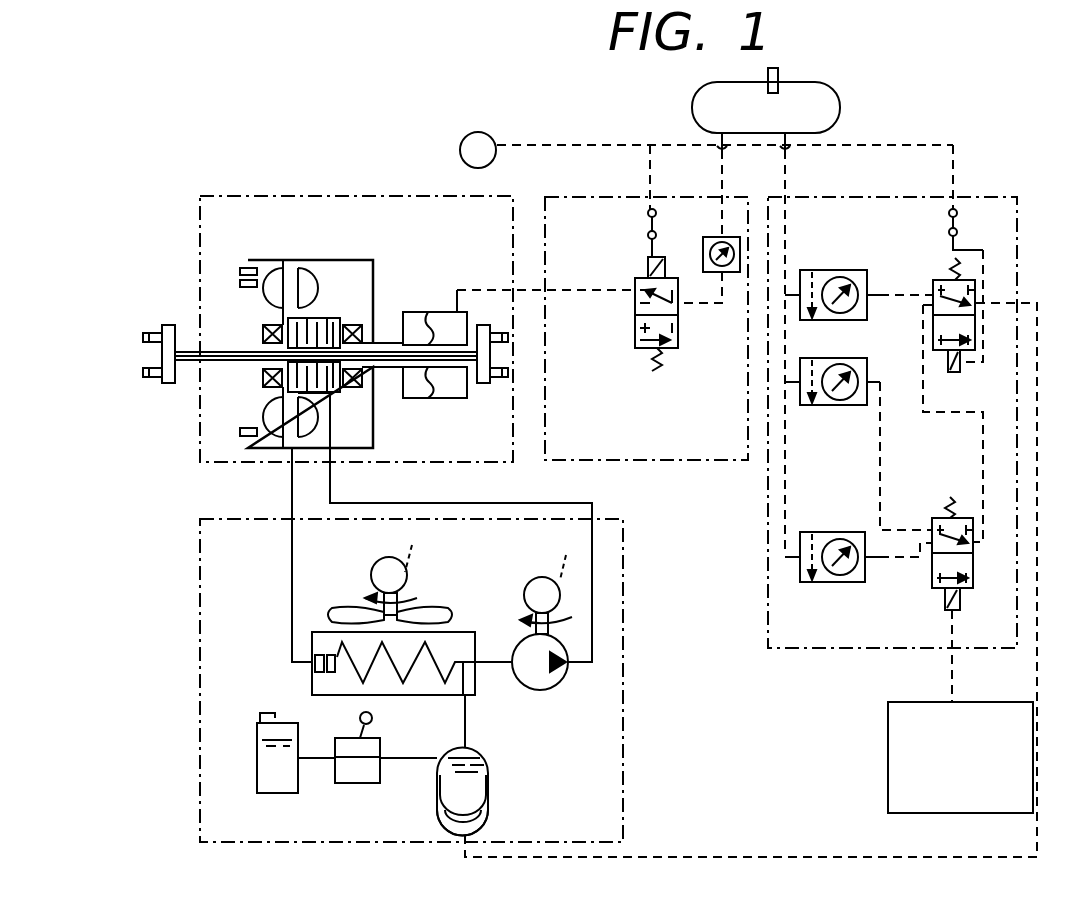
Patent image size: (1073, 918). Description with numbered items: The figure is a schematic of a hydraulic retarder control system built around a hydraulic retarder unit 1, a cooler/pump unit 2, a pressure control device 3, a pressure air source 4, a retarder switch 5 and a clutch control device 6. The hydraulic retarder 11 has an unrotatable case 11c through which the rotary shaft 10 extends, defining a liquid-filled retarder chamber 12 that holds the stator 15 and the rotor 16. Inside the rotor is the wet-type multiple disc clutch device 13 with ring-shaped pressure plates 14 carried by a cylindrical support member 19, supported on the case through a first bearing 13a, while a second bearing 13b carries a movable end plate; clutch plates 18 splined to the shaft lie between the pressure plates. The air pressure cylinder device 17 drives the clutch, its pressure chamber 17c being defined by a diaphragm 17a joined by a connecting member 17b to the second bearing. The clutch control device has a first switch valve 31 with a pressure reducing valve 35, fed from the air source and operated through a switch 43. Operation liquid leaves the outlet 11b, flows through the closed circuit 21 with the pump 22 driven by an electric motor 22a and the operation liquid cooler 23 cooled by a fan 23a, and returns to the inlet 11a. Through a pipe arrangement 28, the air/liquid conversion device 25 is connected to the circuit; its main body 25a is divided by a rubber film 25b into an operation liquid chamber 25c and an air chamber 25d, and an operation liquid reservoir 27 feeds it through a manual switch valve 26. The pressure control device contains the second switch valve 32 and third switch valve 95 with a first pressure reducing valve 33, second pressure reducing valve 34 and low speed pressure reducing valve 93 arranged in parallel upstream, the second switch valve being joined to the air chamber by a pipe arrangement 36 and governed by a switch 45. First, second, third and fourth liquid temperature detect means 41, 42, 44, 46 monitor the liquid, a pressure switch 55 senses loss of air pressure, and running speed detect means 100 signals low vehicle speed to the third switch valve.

The hydraulic retarder unit 1 is at (212, 196).
The cooler/pump unit 2 is at (200, 582).
The pressure control device 3 is at (1017, 270).
The pressure air source 4 is at (840, 100).
The retarder switch 5 is at (462, 140).
The clutch control device 6 is at (672, 461).
The rotary shaft 10 is at (232, 352).
The hydraulic retarder 11 is at (247, 300).
The operation liquid inlet 11a is at (312, 395).
The operation liquid outlet 11b is at (298, 448).
The case 11c is at (278, 262).
The retarder chamber 12 is at (252, 413).
The clutch device 13 is at (350, 390).
The first bearing 13a is at (270, 380).
The second bearing 13b is at (360, 380).
The pressure plates 14 is at (288, 365).
The stator 15 is at (318, 285).
The rotor 16 is at (272, 285).
The air pressure cylinder device 17 is at (410, 312).
The diaphragm 17a is at (447, 312).
The connecting member 17b is at (390, 375).
The pressure chamber 17c is at (452, 385).
The clutch plates 18 is at (268, 330).
The cylindrical support member 19 is at (325, 318).
The closed circuit 21 is at (592, 556).
The pump 22 is at (561, 678).
The electric motor 22a is at (525, 606).
The operation liquid cooler 23 is at (312, 690).
The fan 23a is at (372, 607).
The air/liquid conversion device 25 is at (490, 778).
The main body 25a is at (488, 822).
The rubber film 25b is at (441, 800).
The operation liquid chamber 25c is at (478, 775).
The air chamber 25d is at (485, 810).
The manual switch valve 26 is at (350, 783).
The operation liquid reservoir 27 is at (257, 787).
The pipe arrangement 28 is at (465, 735).
The first switch valve 31 is at (635, 336).
The second switch valve 32 is at (930, 310).
The first pressure reducing valve 33 is at (818, 270).
The second pressure reducing valve 34 is at (830, 405).
The pressure reducing valve 35 is at (706, 237).
The pipe arrangement 36 is at (775, 857).
The first liquid temperature detect means 41 is at (243, 268).
The second liquid temperature detect means 42 is at (328, 655).
The switch 43 is at (645, 232).
The third liquid temperature detect means 44 is at (245, 282).
The switch 45 is at (958, 222).
The fourth liquid temperature detect means 46 is at (318, 655).
The pressure switch 55 is at (778, 78).
The low speed pressure reducing valve 93 is at (832, 582).
The third switch valve 95 is at (932, 582).
The running speed detect means 100 is at (962, 702).